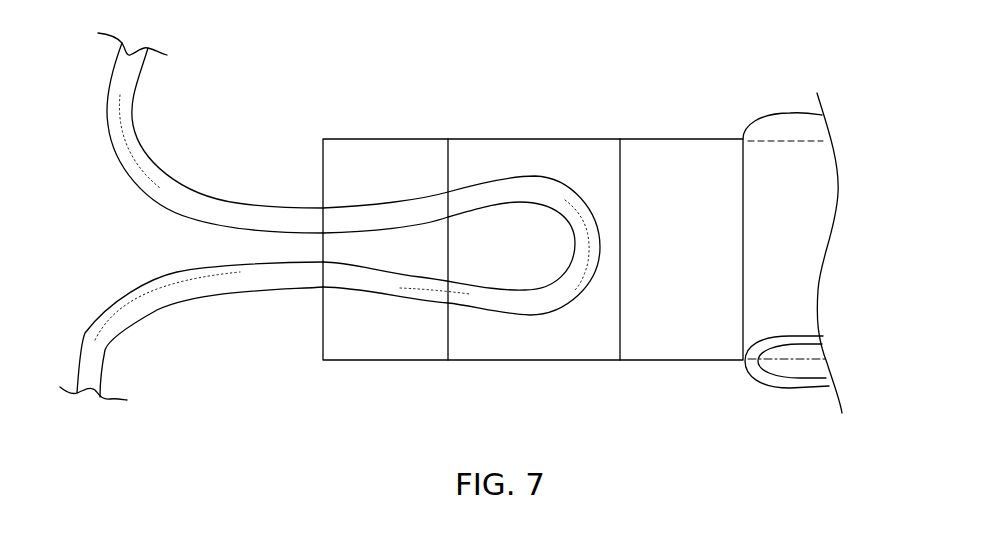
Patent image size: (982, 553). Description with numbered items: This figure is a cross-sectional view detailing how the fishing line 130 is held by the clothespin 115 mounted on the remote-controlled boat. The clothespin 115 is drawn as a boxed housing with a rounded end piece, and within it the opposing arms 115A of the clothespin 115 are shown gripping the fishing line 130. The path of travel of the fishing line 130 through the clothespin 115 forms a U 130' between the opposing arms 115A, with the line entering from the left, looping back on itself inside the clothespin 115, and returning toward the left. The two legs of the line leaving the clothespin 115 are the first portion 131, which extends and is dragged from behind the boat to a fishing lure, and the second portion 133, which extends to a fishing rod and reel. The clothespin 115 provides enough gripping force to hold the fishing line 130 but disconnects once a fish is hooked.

The clothespin 115 is at (582, 236).
The opposing arms 115A is at (608, 152).
The fishing line 130 is at (331, 216).
The U 130' is at (457, 199).
The first portion 131 is at (180, 297).
The second portion 133 is at (255, 212).